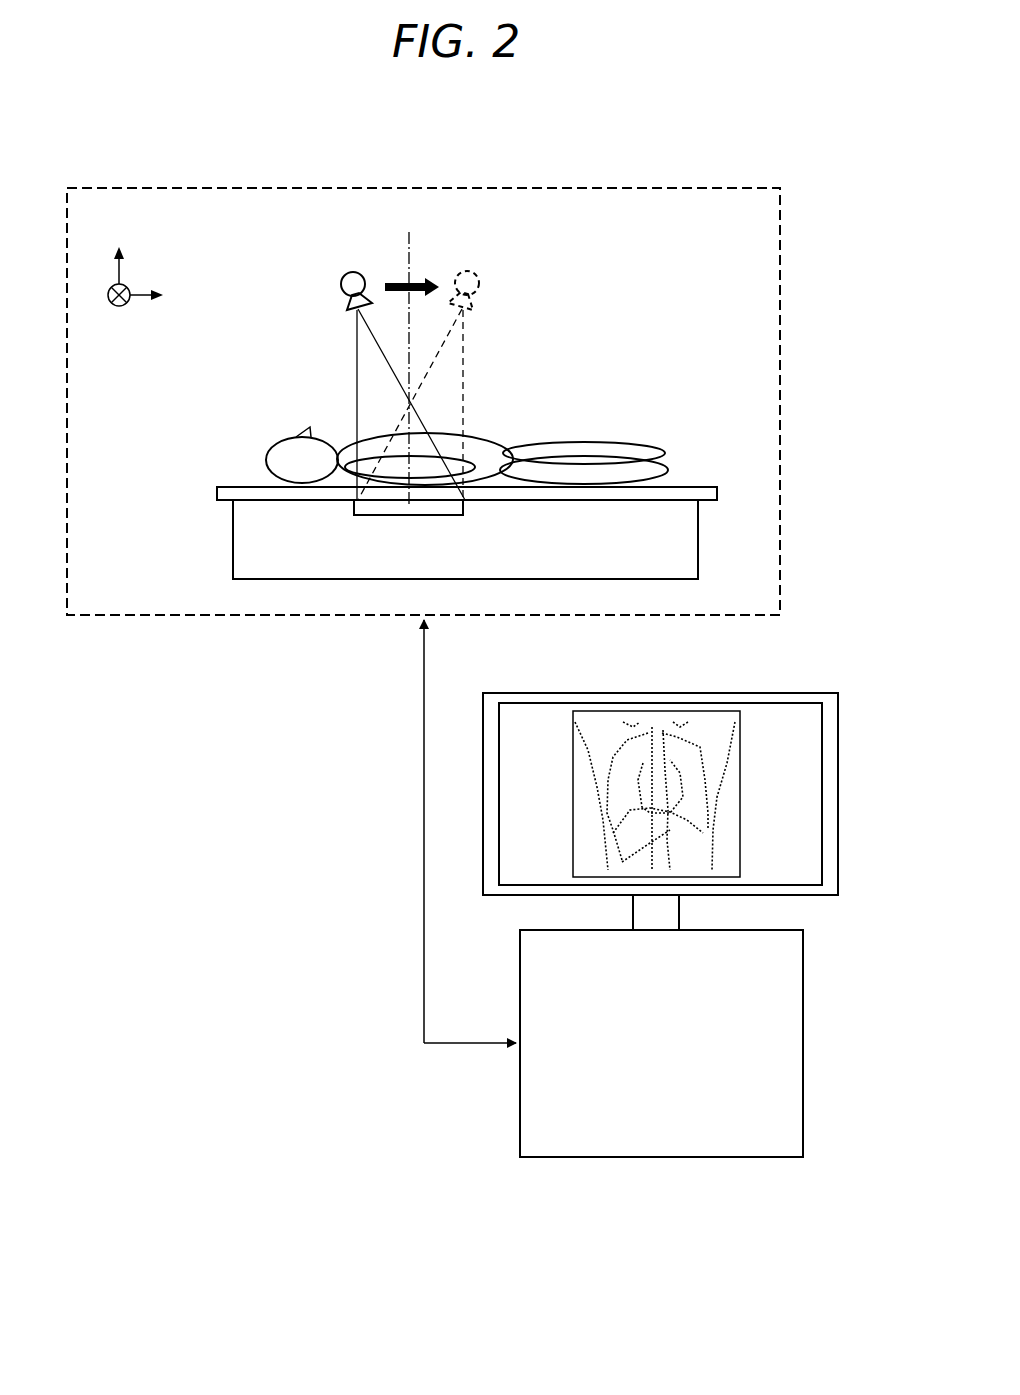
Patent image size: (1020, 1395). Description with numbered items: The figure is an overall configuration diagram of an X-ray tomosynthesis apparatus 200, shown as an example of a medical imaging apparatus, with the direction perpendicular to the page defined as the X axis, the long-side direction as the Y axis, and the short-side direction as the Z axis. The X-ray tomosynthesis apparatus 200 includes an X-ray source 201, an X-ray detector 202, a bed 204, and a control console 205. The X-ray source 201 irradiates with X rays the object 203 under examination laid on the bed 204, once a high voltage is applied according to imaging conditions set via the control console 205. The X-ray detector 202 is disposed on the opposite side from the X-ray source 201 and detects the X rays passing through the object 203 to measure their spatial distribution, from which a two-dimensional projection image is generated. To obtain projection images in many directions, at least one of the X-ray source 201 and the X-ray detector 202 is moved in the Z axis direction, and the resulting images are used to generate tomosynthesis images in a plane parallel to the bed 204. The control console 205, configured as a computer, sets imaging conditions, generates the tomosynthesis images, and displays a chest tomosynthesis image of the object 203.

The X-ray tomosynthesis apparatus 200 is at (840, 190).
The X-ray source 201 is at (340, 287).
The X-ray detector 202 is at (407, 517).
The object under examination 203 is at (290, 437).
The bed 204 is at (233, 540).
The control console 205 is at (662, 1157).